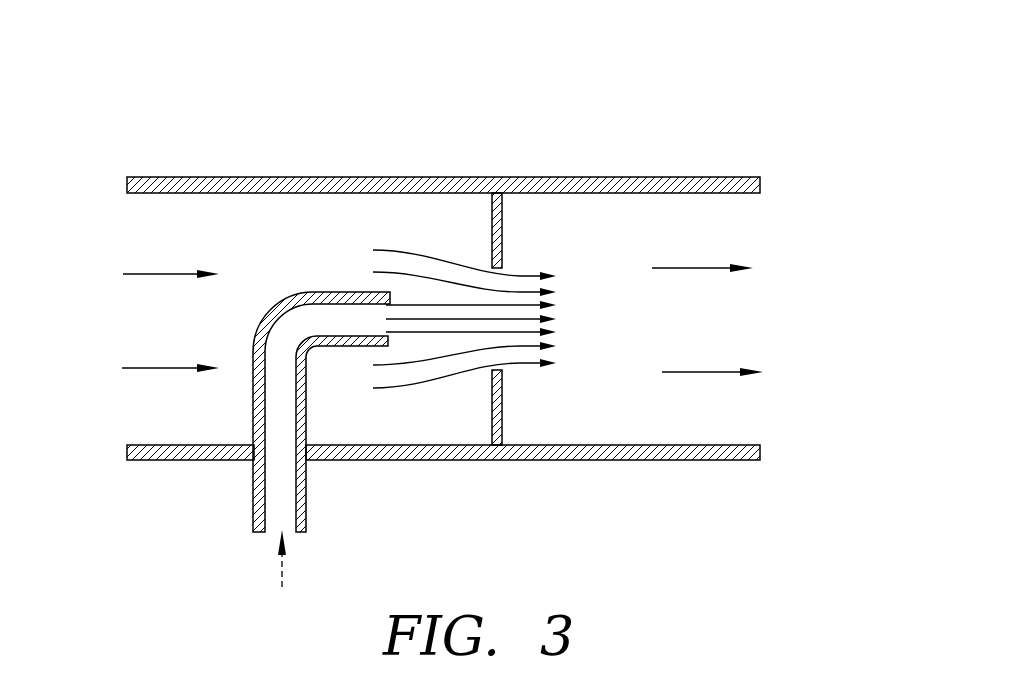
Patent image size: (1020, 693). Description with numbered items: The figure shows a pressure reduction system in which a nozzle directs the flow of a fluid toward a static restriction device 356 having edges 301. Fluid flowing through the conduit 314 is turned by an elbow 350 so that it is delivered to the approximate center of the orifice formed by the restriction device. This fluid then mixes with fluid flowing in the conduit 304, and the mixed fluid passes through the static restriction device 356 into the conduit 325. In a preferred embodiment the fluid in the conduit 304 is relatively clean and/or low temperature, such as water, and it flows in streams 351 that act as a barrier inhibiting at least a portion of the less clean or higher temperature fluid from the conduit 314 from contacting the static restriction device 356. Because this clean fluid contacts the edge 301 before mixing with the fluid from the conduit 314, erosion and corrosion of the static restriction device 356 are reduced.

The static restriction device 356 is at (555, 105).
The elbow 350 is at (305, 323).
The edges 301 is at (503, 268).
The streams 351 is at (460, 320).
The conduit 304 is at (161, 321).
The conduit 325 is at (707, 320).
The conduit 314 is at (308, 566).